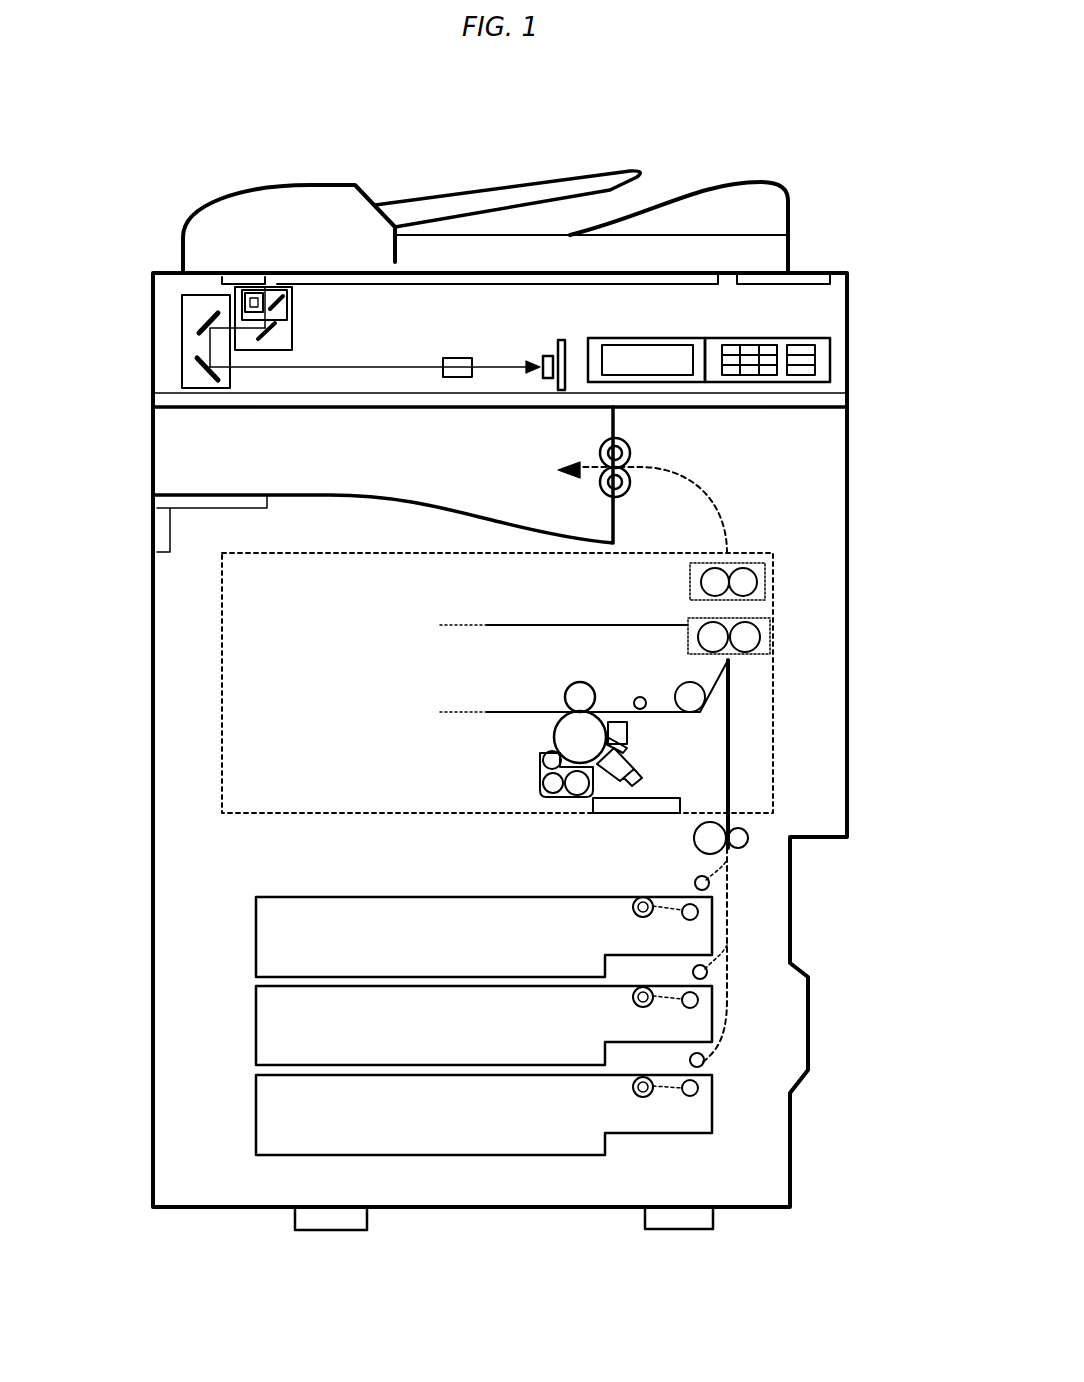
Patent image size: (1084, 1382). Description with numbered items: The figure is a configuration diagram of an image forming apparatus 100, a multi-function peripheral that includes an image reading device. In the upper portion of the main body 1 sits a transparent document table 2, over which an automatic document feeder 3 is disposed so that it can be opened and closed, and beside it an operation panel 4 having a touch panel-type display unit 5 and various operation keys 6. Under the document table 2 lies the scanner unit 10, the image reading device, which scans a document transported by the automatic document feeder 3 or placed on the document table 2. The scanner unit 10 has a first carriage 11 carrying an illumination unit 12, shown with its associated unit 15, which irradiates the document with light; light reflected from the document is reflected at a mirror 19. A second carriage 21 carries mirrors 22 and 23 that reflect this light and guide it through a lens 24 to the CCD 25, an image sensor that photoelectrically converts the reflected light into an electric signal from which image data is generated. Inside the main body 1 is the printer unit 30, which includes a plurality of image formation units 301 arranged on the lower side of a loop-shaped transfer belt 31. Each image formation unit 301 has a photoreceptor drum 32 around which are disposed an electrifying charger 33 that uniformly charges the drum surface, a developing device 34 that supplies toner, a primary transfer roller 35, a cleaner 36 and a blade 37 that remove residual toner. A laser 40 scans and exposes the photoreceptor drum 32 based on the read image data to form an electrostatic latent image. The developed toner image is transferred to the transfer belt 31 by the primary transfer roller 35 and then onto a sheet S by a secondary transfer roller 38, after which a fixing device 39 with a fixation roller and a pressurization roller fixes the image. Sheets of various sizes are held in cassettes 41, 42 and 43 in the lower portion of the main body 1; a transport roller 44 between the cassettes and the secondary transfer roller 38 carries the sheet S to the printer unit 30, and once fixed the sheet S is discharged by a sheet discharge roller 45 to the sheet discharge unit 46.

The image forming apparatus 100 is at (703, 156).
The main body 1 is at (152, 845).
The document table 2 is at (522, 285).
The automatic document feeder 3 is at (278, 182).
The operation panel 4 is at (847, 367).
The display unit 5 is at (643, 343).
The operation keys 6 is at (742, 343).
The scanner unit 10 is at (400, 312).
The first carriage 11 is at (292, 333).
The illumination unit 12 is at (287, 303).
The light source unit 15 is at (236, 288).
The mirror 19 is at (270, 343).
The second carriage 21 is at (181, 347).
The mirror 22 is at (198, 328).
The mirror 23 is at (197, 370).
The lens 24 is at (455, 356).
The CCD 25 is at (540, 355).
The printer unit 30 is at (776, 683).
The image formation unit 301 is at (472, 760).
The transfer belt 31 is at (508, 710).
The photoreceptor drum 32 is at (553, 740).
The electrifying charger 33 is at (635, 762).
The developing device 34 is at (540, 780).
The primary transfer roller 35 is at (580, 682).
The cleaner 36 is at (618, 721).
The blade 37 is at (636, 743).
The secondary transfer roller 38 is at (772, 633).
The fixing device 39 is at (766, 578).
The laser 40 is at (622, 812).
The cassette 41 is at (256, 938).
The cassette 42 is at (256, 1026).
The cassette 43 is at (256, 1126).
The transport roller 44 is at (693, 840).
The sheet discharge roller 45 is at (630, 452).
The sheet discharge unit 46 is at (398, 503).
The sheet S is at (740, 712).